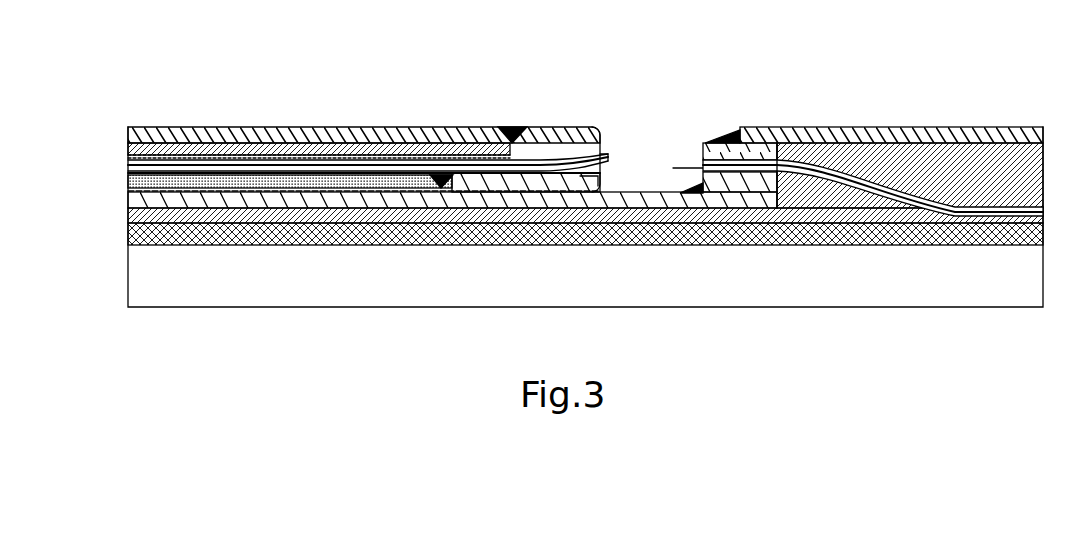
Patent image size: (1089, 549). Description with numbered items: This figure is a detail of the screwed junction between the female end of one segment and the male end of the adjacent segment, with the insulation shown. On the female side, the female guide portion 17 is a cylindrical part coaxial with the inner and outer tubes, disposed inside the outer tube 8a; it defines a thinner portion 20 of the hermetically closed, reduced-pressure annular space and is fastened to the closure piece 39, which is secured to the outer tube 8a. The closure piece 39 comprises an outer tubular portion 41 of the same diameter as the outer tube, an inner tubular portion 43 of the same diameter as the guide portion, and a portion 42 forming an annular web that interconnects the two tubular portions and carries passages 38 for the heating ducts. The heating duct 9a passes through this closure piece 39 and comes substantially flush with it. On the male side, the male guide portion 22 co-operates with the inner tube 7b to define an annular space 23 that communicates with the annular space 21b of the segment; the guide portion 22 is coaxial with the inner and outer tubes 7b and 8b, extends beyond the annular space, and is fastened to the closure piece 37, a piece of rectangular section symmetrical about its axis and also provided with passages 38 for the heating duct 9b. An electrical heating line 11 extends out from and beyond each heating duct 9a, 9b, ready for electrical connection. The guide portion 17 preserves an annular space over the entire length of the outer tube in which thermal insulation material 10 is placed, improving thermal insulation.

The inner tube 7b is at (637, 230).
The outer tube 8a is at (296, 135).
The outer tube 8b is at (1018, 140).
The heating duct 9a is at (178, 160).
The heating duct 9b is at (880, 183).
The thermal insulation material 10 is at (358, 148).
The electrical heating line 11 is at (612, 150).
The female guide portion 17 is at (317, 188).
The annular space 20 is at (392, 152).
The annular space 21b is at (837, 158).
The male guide portion 22 is at (240, 215).
The annular space 23 is at (372, 205).
The closure piece 37 is at (740, 178).
The passages 38 is at (750, 152).
The closure piece 39 is at (573, 120).
The outer tubular portion 41 is at (541, 130).
The annular web portion 42 is at (590, 177).
The inner tubular portion 43 is at (537, 178).